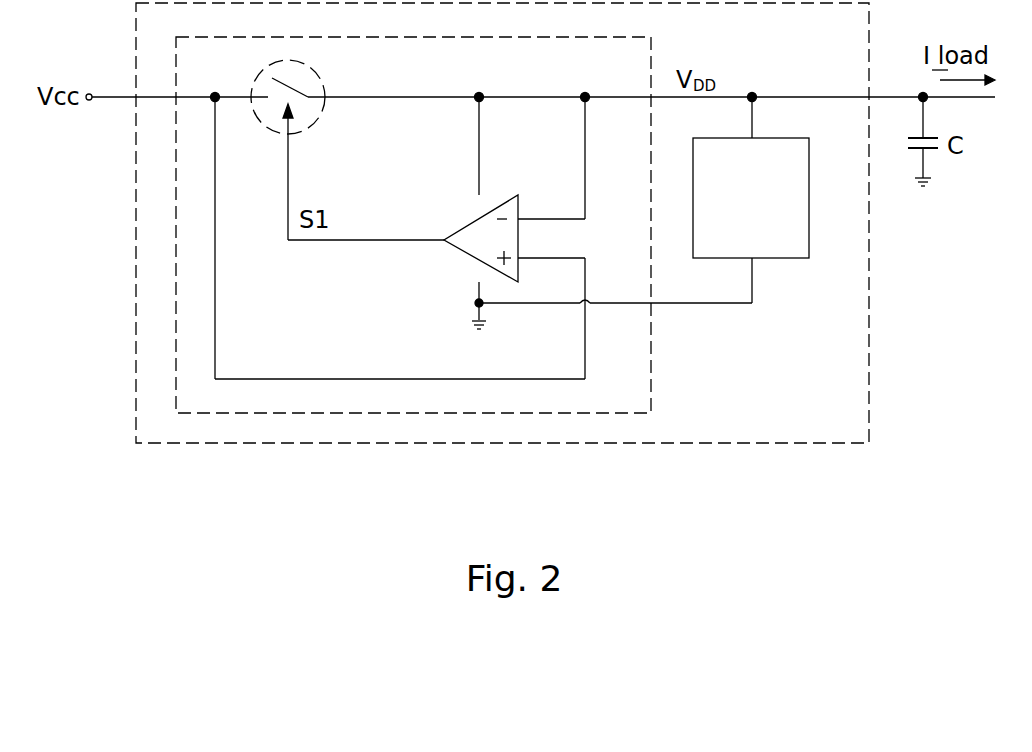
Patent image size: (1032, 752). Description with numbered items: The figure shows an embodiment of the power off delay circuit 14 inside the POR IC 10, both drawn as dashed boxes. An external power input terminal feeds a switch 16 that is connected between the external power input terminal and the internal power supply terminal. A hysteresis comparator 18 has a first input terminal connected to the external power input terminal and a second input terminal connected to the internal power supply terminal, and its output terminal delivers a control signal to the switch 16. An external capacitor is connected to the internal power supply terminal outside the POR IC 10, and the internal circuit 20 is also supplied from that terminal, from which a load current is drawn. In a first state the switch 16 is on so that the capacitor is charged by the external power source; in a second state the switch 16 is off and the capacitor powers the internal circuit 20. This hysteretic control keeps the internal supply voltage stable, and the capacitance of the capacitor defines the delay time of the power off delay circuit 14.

The POR IC 10 is at (136, 216).
The power off delay circuit 14 is at (651, 343).
The switch 16 is at (319, 111).
The hysteresis comparator 18 is at (466, 258).
The internal circuit 20 is at (780, 259).